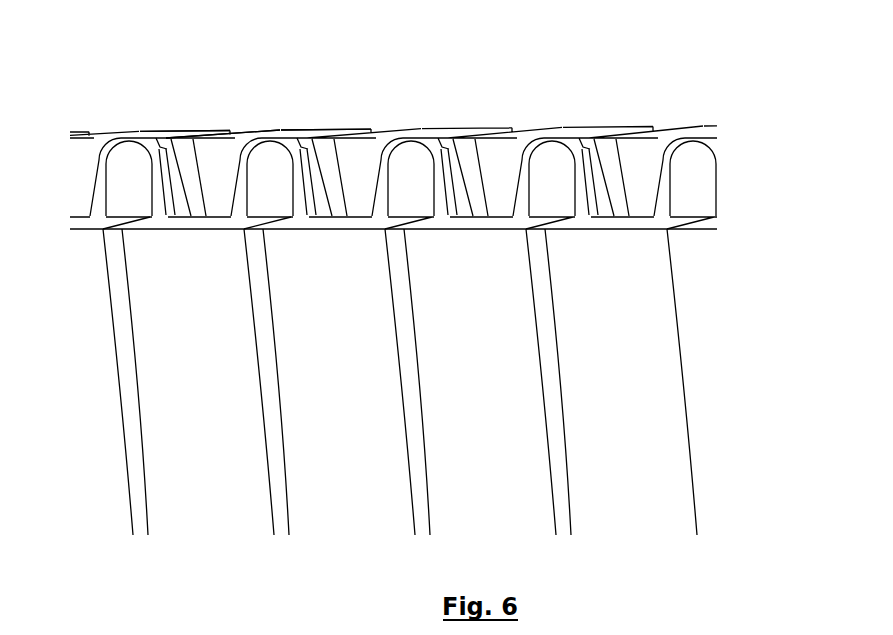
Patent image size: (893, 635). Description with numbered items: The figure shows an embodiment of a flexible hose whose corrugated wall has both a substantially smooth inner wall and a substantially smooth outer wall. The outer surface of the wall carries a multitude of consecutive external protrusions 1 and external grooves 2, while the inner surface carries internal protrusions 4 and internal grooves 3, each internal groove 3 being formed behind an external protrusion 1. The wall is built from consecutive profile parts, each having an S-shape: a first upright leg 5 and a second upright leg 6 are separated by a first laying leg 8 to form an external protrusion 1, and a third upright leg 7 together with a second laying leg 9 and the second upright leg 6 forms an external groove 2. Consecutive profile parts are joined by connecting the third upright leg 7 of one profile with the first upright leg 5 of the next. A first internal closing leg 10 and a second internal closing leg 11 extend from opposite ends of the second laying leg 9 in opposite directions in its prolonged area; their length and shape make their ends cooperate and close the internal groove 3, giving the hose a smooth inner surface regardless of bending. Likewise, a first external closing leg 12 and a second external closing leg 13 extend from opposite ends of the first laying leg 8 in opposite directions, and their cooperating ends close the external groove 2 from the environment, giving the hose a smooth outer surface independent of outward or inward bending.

The external protrusion 1 is at (270, 98).
The external groove 2 is at (190, 150).
The internal groove 3 is at (285, 212).
The internal protrusion 4 is at (173, 262).
The first upright leg 5 is at (318, 188).
The second upright leg 6 is at (242, 180).
The third upright leg 7 is at (157, 180).
The first laying leg 8 is at (280, 132).
The second laying leg 9 is at (204, 224).
The first internal closing leg 10 is at (146, 230).
The second internal closing leg 11 is at (260, 230).
The first external closing leg 12 is at (340, 132).
The second external closing leg 13 is at (233, 133).